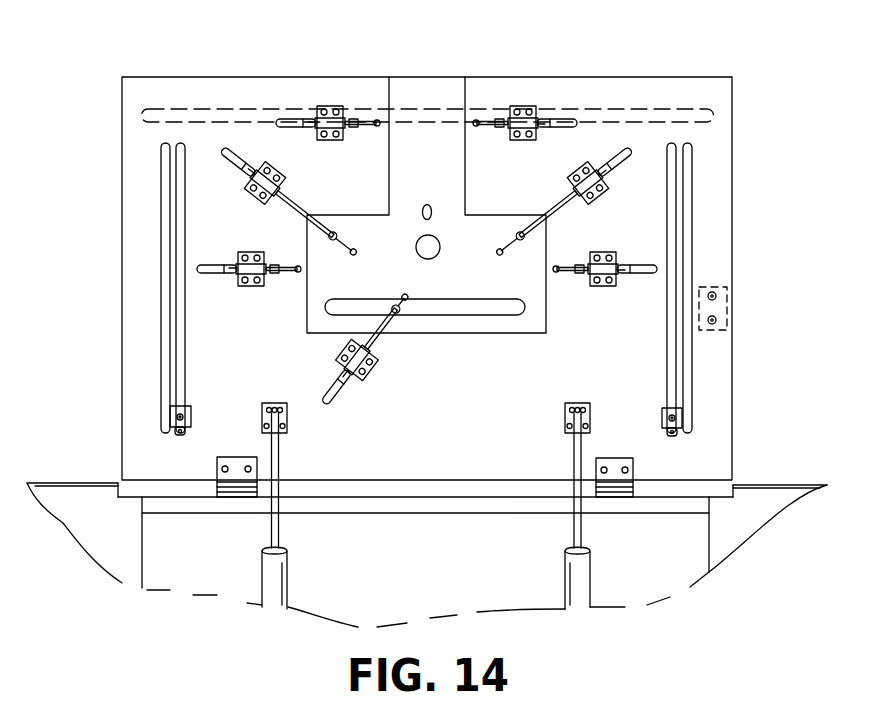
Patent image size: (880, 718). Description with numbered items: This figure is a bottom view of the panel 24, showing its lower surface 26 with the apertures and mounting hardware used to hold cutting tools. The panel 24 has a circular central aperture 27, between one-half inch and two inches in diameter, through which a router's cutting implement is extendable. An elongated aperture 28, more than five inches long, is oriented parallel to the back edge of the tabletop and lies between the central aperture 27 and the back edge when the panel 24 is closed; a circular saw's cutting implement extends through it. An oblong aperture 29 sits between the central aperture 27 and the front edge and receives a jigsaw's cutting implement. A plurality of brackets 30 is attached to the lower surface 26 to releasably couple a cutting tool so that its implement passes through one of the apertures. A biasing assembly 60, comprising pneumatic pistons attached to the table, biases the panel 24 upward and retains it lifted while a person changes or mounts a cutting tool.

The panel 24 is at (732, 110).
The lower surface 26 is at (707, 200).
The central aperture 27 is at (433, 241).
The elongated aperture 28 is at (350, 308).
The oblong aperture 29 is at (423, 207).
The brackets 30 is at (588, 178).
The biasing assembly 60 is at (262, 577).